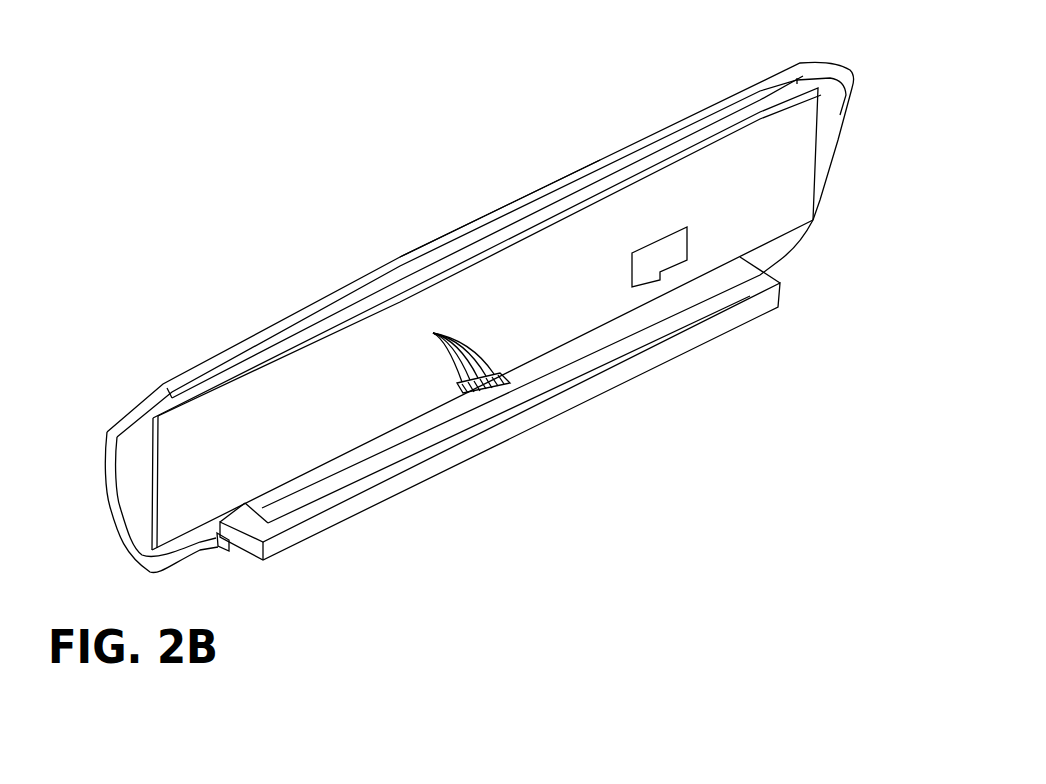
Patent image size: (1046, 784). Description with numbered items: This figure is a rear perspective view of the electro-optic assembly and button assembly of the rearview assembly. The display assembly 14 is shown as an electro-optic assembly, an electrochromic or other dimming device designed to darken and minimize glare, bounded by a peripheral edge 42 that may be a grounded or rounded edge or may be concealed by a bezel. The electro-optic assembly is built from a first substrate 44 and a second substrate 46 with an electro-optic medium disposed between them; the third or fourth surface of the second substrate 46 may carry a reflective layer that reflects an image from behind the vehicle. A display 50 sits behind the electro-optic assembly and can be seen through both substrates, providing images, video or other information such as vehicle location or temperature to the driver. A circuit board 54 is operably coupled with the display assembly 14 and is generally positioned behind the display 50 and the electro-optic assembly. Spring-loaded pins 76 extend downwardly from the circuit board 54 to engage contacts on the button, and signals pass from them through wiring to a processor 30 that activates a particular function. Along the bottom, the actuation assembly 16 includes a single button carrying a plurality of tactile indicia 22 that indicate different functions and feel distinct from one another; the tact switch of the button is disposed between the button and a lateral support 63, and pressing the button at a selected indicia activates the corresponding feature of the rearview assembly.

The display assembly 14 is at (846, 158).
The tactile indicia 22 is at (502, 128).
The peripheral edge 42 is at (805, 63).
The first substrate 44 is at (112, 472).
The second substrate 46 is at (135, 492).
The display 50 is at (285, 350).
The circuit board 54 is at (527, 318).
The processor 30 is at (658, 252).
The spring-loaded pins 76 is at (433, 333).
The lateral support 63 is at (680, 342).
The actuation assembly 16 is at (233, 552).